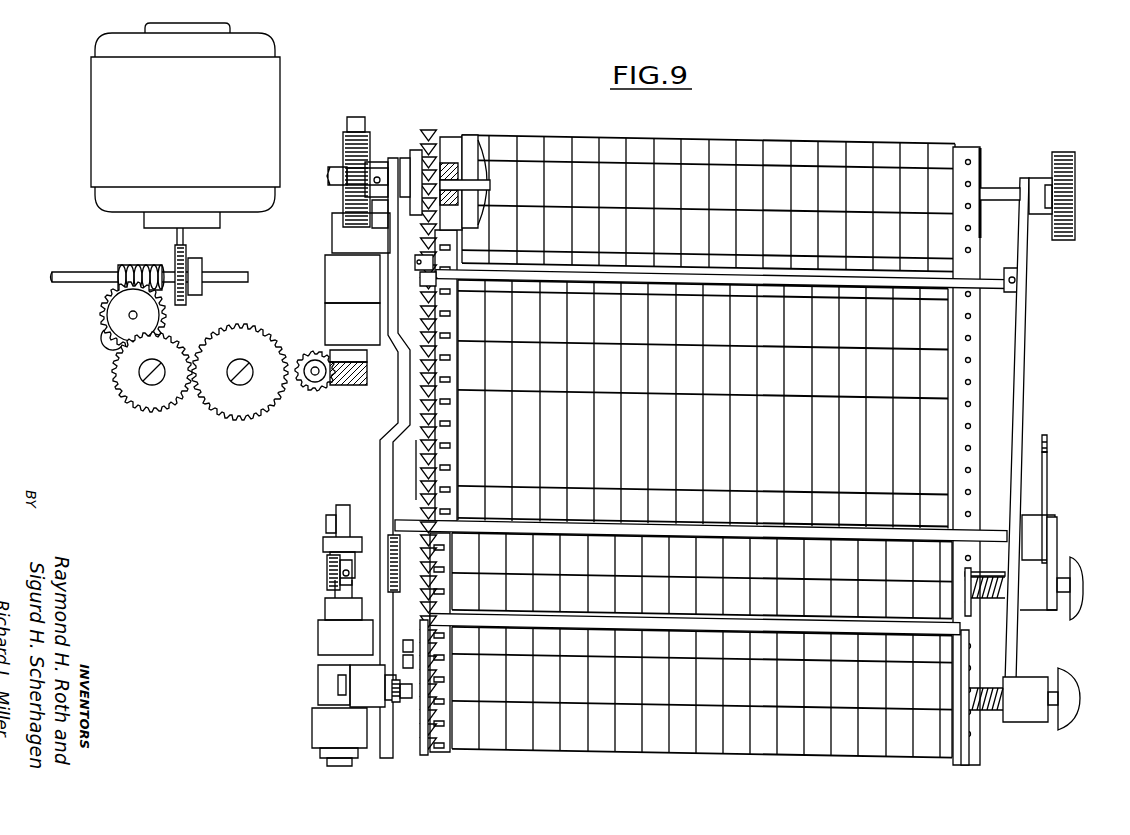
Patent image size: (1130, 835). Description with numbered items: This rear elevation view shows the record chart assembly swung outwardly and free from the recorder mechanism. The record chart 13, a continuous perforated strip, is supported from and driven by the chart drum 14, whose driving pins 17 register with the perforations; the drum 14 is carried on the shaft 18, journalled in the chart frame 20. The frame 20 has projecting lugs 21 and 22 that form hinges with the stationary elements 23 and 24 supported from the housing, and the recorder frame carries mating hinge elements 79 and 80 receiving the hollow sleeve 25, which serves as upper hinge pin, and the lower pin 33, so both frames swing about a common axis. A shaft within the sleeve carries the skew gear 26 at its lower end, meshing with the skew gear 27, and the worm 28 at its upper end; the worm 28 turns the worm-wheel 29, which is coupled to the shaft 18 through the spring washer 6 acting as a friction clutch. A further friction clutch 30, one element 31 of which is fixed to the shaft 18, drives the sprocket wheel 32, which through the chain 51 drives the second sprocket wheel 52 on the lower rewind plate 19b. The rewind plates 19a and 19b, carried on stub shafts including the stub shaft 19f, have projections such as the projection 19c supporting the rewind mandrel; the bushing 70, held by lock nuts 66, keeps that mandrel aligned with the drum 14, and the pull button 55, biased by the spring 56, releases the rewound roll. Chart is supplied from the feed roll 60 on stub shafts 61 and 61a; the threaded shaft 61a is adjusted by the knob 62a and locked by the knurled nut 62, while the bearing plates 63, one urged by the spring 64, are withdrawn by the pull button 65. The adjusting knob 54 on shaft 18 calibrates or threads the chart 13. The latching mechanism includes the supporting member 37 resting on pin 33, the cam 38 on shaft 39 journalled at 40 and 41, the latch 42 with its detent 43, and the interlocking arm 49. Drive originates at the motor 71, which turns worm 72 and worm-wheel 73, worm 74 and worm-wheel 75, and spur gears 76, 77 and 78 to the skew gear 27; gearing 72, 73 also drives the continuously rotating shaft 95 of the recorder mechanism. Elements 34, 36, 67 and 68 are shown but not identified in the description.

The spring washer 6 is at (340, 168).
The record chart 13 is at (945, 345).
The chart drum 14 is at (466, 160).
The driving pins 17 is at (448, 138).
The shaft 18 is at (482, 175).
The rewind plate 19a is at (967, 760).
The lower rewind plate 19b is at (425, 757).
The projection 19c is at (1005, 715).
The stub shaft 19f is at (396, 704).
The chart frame 20 is at (386, 455).
The projecting lug 21 is at (333, 238).
The projecting lug 22 is at (320, 630).
The stationary hinge element 23 is at (333, 318).
The stationary hinge element 24 is at (313, 723).
The hollow sleeve 25 is at (345, 205).
The skew gear 26 is at (350, 382).
The skew gear 27 is at (316, 386).
The worm 28 is at (343, 140).
The worm-wheel 29 is at (347, 222).
The friction clutch 30 is at (416, 155).
The clutch element 31 is at (405, 168).
The sprocket wheel 32 is at (430, 132).
The pin 33 is at (332, 760).
The base plate 34 is at (322, 751).
The bracket 36 is at (356, 615).
The supporting member 37 is at (325, 546).
The cam 38 is at (330, 523).
The shaft 39 is at (984, 538).
The journal 40 is at (338, 508).
The journal 41 is at (1032, 528).
The latch 42 is at (1048, 487).
The detent 43 is at (1048, 455).
The interlocking arm 49 is at (1058, 538).
The chain 51 is at (416, 470).
The second sprocket wheel 52 is at (414, 700).
The adjusting knob 54 is at (1076, 176).
The pull button 55 is at (1072, 729).
The spring 56 is at (980, 712).
The chart feed roll 60 is at (962, 625).
The stub shaft 61 is at (990, 573).
The threaded stub shaft 61a is at (406, 645).
The knurled lock nut 62 is at (390, 578).
The knob 62a is at (330, 566).
The bearing plate 63 is at (970, 622).
The spring 64 is at (986, 599).
The pull button 65 is at (1081, 580).
The lock nuts 66 is at (398, 686).
The chain tensioner block 67 is at (420, 258).
The tensioner roller 68 is at (425, 284).
The adjustable bushing 70 is at (337, 690).
The motor 71 is at (98, 150).
The worm 72 is at (176, 258).
The worm-wheel 73 is at (196, 256).
The worm 74 is at (128, 268).
The worm-wheel 75 is at (103, 308).
The spur gear 76 is at (115, 338).
The spur gear 77 is at (172, 395).
The spur gear 78 is at (266, 396).
The hinge element 79 is at (330, 273).
The hinge element 80 is at (320, 681).
The continuously rotating shaft 95 is at (232, 278).